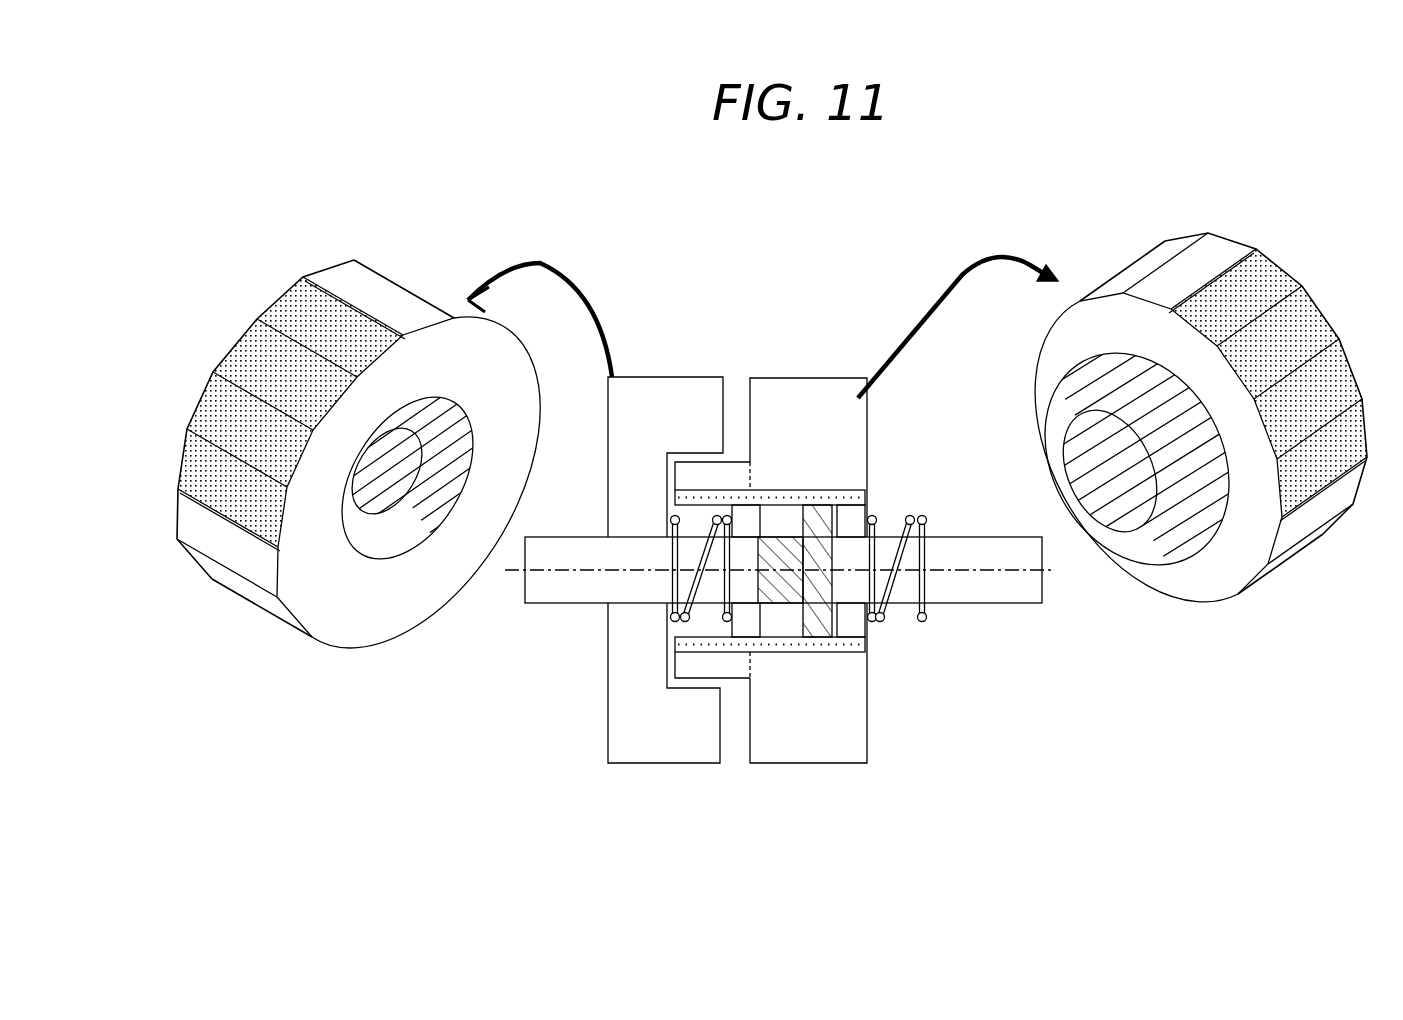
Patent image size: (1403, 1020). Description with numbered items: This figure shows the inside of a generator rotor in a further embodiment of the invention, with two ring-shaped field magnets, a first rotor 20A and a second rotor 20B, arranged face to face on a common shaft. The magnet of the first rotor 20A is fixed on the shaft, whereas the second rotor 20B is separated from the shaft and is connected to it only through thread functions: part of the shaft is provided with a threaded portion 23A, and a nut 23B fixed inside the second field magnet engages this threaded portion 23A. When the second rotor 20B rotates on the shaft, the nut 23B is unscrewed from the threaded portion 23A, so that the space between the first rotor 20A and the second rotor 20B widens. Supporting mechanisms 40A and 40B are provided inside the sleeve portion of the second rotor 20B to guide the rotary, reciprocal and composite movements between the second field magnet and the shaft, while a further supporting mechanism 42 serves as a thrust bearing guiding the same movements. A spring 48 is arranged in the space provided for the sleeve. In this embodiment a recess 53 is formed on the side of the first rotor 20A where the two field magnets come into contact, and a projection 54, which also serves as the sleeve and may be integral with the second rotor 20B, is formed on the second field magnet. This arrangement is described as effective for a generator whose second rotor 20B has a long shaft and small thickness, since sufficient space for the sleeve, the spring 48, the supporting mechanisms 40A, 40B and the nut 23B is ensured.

The first rotor 20A is at (450, 485).
The second rotor 20B is at (810, 378).
The supporting mechanism 42 is at (737, 500).
The projection 54 is at (713, 485).
The recess 53 is at (405, 533).
The spring 48 is at (670, 626).
The supporting mechanism 40A is at (747, 627).
The supporting mechanism 40B is at (850, 627).
The threaded portion 23A is at (783, 587).
The nut 23B is at (818, 530).